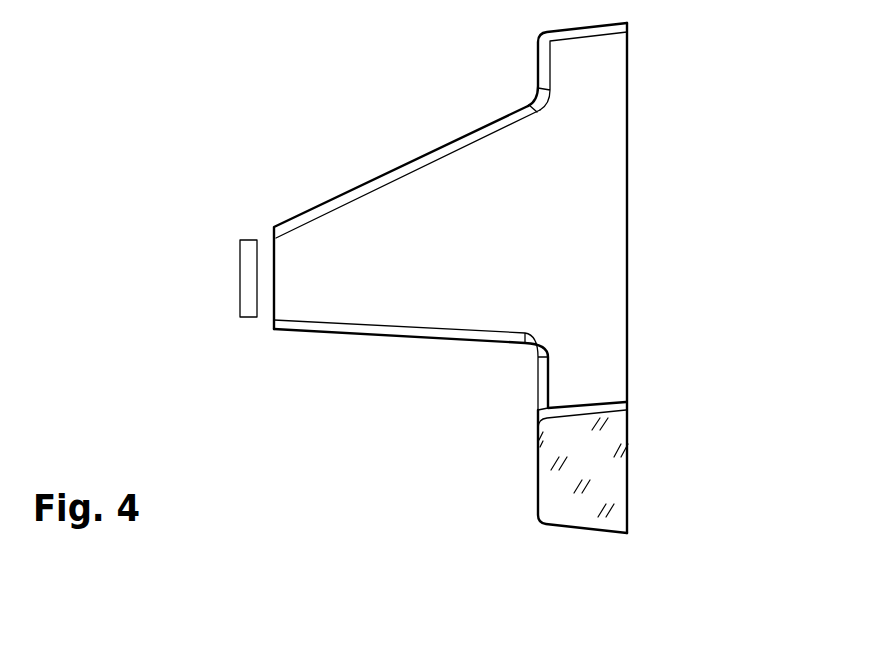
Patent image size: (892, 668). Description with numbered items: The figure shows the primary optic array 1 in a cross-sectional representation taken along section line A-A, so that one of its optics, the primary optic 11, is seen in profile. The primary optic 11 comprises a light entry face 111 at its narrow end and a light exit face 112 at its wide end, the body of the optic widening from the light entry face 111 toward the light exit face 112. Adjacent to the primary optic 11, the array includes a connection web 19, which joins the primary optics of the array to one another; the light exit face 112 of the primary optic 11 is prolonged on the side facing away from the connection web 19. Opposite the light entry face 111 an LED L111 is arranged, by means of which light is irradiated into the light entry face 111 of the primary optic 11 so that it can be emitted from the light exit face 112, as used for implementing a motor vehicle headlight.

The primary optic array 1 is at (705, 260).
The primary optic 11 is at (422, 312).
The light entry face 111 is at (268, 238).
The light exit face 112 is at (627, 135).
The connection web 19 is at (560, 500).
The LED L111 is at (250, 280).